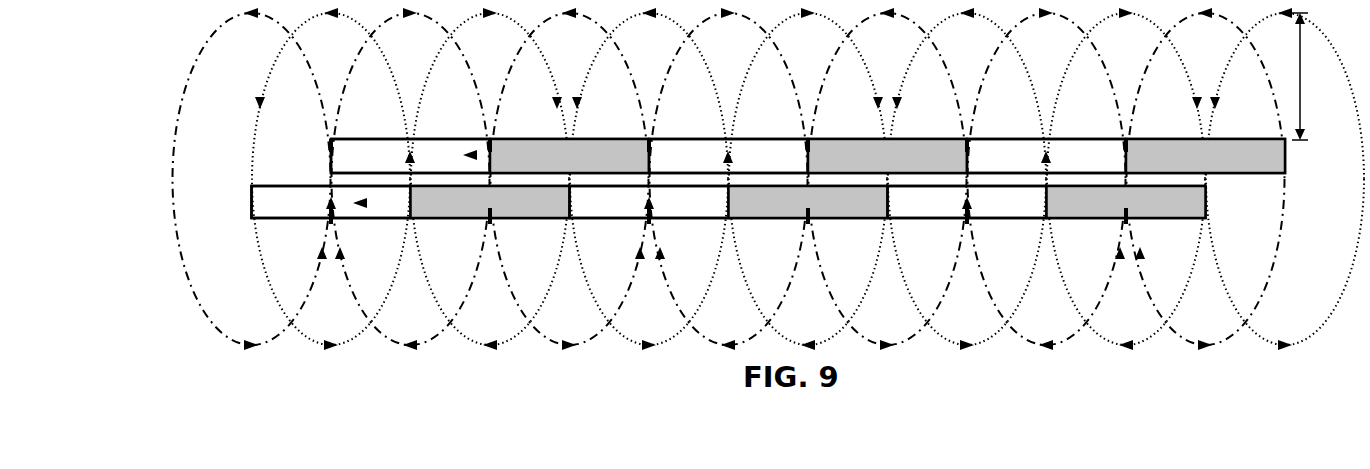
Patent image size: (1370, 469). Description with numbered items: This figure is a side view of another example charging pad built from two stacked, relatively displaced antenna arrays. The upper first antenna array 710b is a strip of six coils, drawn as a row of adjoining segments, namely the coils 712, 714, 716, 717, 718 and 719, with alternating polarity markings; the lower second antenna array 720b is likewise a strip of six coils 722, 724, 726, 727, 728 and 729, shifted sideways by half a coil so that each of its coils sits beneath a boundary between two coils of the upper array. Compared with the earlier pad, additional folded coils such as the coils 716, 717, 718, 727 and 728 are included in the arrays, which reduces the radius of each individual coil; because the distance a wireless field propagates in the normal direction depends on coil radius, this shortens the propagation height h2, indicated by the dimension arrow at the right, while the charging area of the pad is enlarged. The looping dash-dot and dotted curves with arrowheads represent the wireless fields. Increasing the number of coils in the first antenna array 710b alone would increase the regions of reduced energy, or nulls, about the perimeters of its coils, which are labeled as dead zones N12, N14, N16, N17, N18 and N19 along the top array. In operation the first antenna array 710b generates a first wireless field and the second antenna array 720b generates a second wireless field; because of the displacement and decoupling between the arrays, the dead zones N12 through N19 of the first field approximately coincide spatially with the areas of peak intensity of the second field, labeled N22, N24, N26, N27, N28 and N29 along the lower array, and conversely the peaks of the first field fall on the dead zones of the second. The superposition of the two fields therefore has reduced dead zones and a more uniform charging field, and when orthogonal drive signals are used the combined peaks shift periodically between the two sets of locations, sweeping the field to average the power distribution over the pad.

The first antenna array 710b is at (327, 155).
The second antenna array 720b is at (248, 203).
The coil 712 is at (412, 170).
The coil 714 is at (571, 170).
The coil 716 is at (730, 170).
The coil 717 is at (889, 170).
The coil 718 is at (1048, 170).
The coil 719 is at (1207, 170).
The coil 722 is at (332, 216).
The coil 724 is at (491, 216).
The coil 726 is at (650, 216).
The coil 727 is at (809, 216).
The coil 728 is at (968, 216).
The coil 729 is at (1127, 216).
The dead zone N12 is at (343, 137).
The dead zone N14 is at (502, 137).
The dead zone N16 is at (660, 137).
The dead zone N17 is at (819, 137).
The dead zone N18 is at (978, 137).
The dead zone N19 is at (1135, 137).
The peak intensity area N22 is at (324, 225).
The peak intensity area N24 is at (482, 225).
The peak intensity area N26 is at (642, 225).
The peak intensity area N27 is at (800, 225).
The peak intensity area N28 is at (958, 225).
The peak intensity area N29 is at (1118, 225).
The height h2 is at (1311, 76).